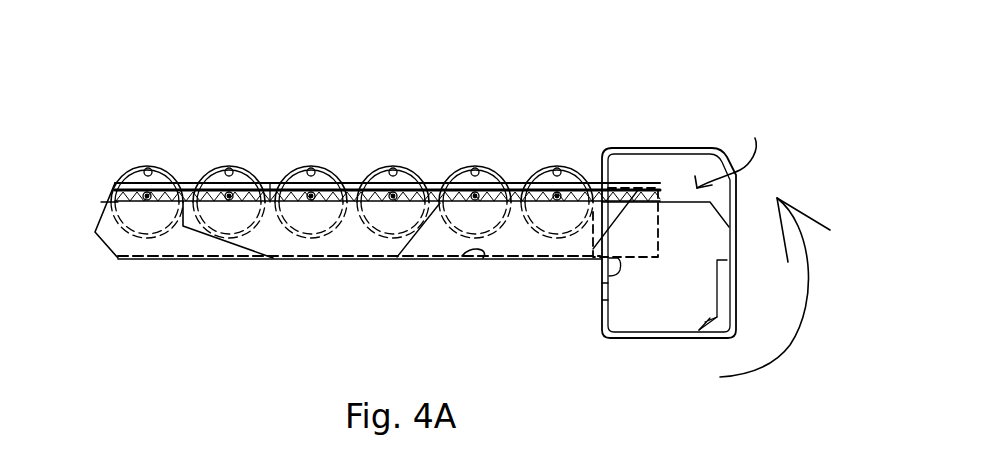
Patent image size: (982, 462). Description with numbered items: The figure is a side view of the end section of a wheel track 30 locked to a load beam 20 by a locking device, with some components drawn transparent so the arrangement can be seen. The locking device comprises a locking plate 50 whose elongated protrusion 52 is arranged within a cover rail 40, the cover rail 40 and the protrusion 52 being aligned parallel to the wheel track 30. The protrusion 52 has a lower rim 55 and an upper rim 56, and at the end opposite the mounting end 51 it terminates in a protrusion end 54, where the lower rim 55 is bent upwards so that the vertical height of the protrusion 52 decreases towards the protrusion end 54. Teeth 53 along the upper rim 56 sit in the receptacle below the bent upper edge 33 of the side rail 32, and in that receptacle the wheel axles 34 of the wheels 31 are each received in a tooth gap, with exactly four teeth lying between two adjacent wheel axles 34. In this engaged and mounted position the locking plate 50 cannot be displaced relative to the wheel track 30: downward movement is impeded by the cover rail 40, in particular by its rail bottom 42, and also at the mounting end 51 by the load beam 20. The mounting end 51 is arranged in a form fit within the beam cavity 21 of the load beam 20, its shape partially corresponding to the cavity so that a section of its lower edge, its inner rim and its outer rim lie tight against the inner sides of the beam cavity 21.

The load beam 20 is at (670, 150).
The beam cavity 21 is at (740, 145).
The wheel track 30 is at (188, 178).
The wheels 31 is at (233, 167).
The side rail 32 is at (145, 245).
The bent upper edge 33 is at (620, 193).
The wheel axles 34 is at (408, 194).
The cover rail 40 is at (592, 248).
The rail bottom 42 is at (302, 262).
The locking plate 50 is at (427, 245).
The mounting end 51 is at (628, 316).
The protrusion 52 is at (272, 244).
The teeth 53 is at (355, 190).
The protrusion end 54 is at (178, 232).
The lower rim 55 is at (483, 252).
The upper rim 56 is at (278, 177).